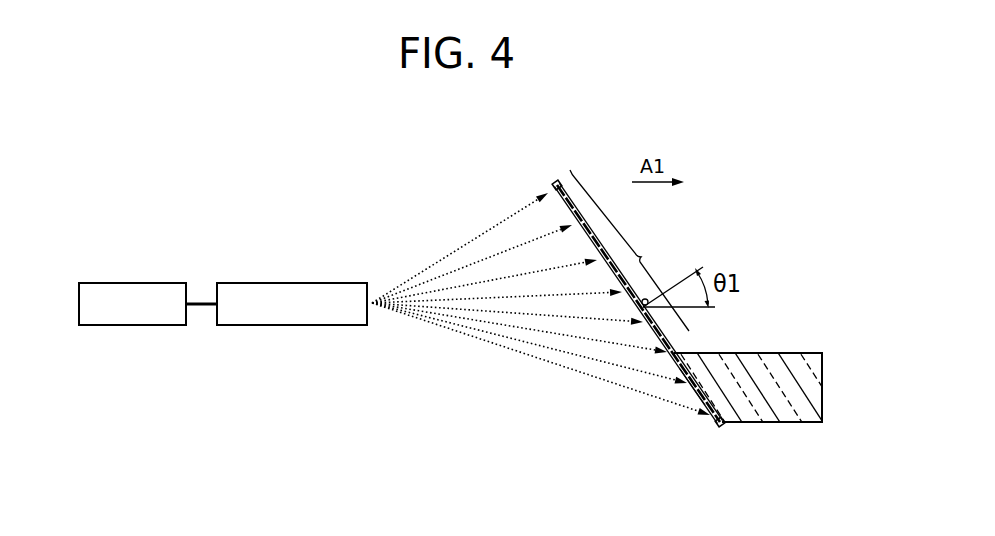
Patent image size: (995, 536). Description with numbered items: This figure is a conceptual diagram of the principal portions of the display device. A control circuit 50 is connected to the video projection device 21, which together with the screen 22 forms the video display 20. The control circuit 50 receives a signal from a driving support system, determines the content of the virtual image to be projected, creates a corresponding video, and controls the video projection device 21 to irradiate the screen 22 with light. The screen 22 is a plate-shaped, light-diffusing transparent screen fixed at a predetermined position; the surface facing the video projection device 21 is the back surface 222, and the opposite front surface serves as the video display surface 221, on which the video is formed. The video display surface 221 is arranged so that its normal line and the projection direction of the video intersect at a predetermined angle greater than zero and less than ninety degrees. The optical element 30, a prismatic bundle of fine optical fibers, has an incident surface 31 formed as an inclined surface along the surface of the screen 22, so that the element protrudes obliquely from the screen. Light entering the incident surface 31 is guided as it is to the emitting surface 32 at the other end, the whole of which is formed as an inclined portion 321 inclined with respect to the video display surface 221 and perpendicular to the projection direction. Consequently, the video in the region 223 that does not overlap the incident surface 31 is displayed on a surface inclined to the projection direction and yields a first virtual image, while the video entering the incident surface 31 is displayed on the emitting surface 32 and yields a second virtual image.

The video display 20 is at (456, 147).
The video projection device 21 is at (351, 283).
The screen 22 is at (553, 184).
The video display surface 221 is at (568, 183).
The back surface 222 is at (700, 395).
The region 223 is at (629, 250).
The optical element 30 is at (776, 417).
The incident surface 31 is at (720, 426).
The emitting surface 32 is at (822, 402).
The inclined portion 321 is at (822, 372).
The control circuit 50 is at (131, 283).